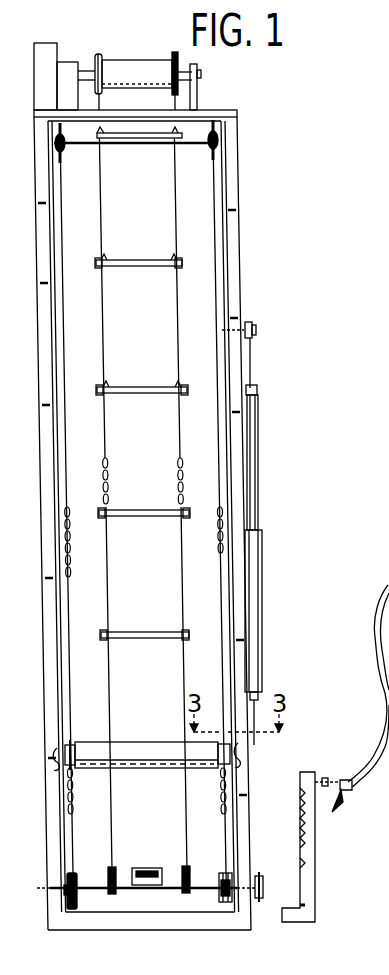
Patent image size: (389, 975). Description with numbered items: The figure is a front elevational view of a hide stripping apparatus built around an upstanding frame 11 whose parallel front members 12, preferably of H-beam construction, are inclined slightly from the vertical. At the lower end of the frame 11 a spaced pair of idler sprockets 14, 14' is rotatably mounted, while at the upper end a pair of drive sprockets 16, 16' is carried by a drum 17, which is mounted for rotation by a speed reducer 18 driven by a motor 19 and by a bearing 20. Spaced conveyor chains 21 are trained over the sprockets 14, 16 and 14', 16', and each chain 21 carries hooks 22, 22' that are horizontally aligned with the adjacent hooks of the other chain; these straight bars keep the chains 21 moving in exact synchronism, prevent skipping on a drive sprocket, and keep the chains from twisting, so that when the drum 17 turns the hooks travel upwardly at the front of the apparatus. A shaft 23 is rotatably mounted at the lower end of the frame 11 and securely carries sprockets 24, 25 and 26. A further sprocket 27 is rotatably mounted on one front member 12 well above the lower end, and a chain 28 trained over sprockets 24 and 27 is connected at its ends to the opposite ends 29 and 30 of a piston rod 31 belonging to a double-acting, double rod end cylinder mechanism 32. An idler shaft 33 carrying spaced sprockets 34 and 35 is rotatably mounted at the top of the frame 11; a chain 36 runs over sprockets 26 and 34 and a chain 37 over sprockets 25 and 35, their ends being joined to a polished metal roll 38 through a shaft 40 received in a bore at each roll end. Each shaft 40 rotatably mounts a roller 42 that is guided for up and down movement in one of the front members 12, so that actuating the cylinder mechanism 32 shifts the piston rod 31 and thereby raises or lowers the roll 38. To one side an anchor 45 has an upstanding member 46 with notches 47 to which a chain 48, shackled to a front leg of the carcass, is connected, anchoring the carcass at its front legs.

The frame 11 is at (244, 233).
The front member 12 is at (233, 191).
The idler sprocket 14 is at (146, 863).
The idler sprocket 14' is at (146, 850).
The drive sprocket 16 is at (140, 59).
The drive sprocket 16' is at (118, 73).
The drum 17 is at (127, 78).
The speed reducer 18 is at (65, 72).
The motor 19 is at (42, 55).
The bearing 20 is at (201, 75).
The conveyor chain 21 is at (172, 338).
The hook 22 is at (143, 434).
The hook 22' is at (142, 436).
The shaft 23 is at (207, 880).
The sprocket 24 is at (262, 900).
The sprocket 25 is at (222, 896).
The sprocket 26 is at (76, 905).
The sprocket 27 is at (253, 328).
The chain 28 is at (253, 365).
The piston rod end 29 is at (262, 696).
The piston rod end 30 is at (257, 389).
The piston rod 31 is at (266, 460).
The cylinder mechanism 32 is at (270, 582).
The idler shaft 33 is at (127, 147).
The sprocket 34 is at (62, 162).
The sprocket 35 is at (222, 152).
The chain 36 is at (64, 334).
The chain 37 is at (216, 309).
The roll 38 is at (128, 755).
The shaft 40 is at (76, 727).
The roller 42 is at (240, 772).
The anchor 45 is at (324, 877).
The upstanding member 46 is at (310, 853).
The notch 47 is at (318, 829).
The chain 48 is at (315, 776).